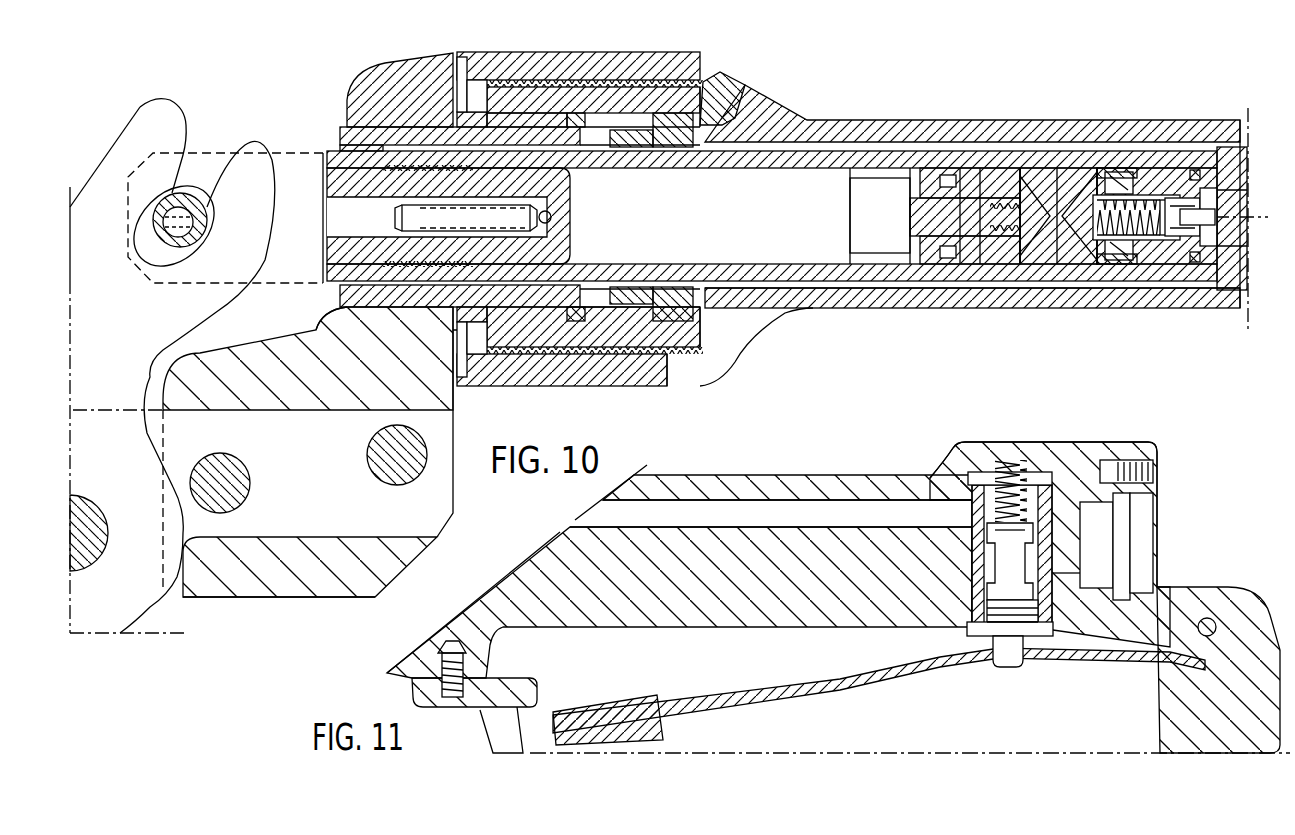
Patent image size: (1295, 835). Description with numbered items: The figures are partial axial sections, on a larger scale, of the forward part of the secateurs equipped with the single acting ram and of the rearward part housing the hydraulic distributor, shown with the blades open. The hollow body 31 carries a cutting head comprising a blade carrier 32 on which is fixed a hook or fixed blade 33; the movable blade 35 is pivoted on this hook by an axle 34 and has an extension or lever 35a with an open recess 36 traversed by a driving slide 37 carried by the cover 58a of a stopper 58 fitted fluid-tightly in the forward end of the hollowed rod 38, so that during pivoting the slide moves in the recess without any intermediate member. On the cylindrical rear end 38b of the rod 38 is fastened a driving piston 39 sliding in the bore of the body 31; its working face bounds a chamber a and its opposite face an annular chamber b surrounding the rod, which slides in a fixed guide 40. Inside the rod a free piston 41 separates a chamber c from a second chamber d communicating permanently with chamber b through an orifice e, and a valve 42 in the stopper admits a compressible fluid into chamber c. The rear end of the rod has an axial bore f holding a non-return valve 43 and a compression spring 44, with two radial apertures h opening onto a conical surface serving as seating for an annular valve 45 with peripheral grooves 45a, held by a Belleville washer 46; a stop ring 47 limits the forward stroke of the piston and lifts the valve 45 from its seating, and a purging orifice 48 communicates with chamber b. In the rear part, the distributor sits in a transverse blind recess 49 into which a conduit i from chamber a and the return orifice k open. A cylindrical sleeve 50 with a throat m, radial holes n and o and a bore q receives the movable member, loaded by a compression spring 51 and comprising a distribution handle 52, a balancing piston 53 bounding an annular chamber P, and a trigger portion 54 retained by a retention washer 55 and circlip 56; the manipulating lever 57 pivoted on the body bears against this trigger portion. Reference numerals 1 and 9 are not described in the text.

In FIG. 11, the housing 1 is at (1080, 613).
In FIG. 10, the valve rod 9 is at (1217, 216).
In FIG. 10, the hollow body 31 is at (822, 298).
In FIG. 11, the hollow body 31 is at (832, 486).
In FIG. 10, the blade carrier 32 is at (440, 383).
In FIG. 10, the hook or fixed blade 33 is at (228, 530).
In FIG. 10, the axle 34 is at (100, 542).
In FIG. 10, the movable blade 35 is at (92, 196).
In FIG. 10, the extension or lever 35a is at (164, 115).
In FIG. 10, the open recess 36 is at (208, 173).
In FIG. 10, the driving slide 37 is at (184, 200).
In FIG. 10, the hollowed rod 38 is at (735, 275).
In FIG. 10, the cylindrical rear end 38b is at (1185, 238).
In FIG. 10, the driving piston 39 is at (1233, 300).
In FIG. 10, the fixed guide 40 is at (523, 313).
In FIG. 10, the free piston 41 is at (912, 252).
In FIG. 10, the valve 42 is at (400, 218).
In FIG. 10, the non-return valve 43 is at (1197, 250).
In FIG. 10, the compression spring 44 is at (1147, 228).
In FIG. 10, the annular valve 45 is at (1150, 168).
In FIG. 10, the peripheral grooves 45a is at (1107, 160).
In FIG. 10, the Belleville washer 46 is at (1185, 166).
In FIG. 10, the stop ring 47 is at (673, 313).
In FIG. 10, the purging orifice 48 is at (735, 95).
In FIG. 11, the transverse blind recess 49 is at (965, 494).
In FIG. 11, the cylindrical sleeve 50 is at (1053, 617).
In FIG. 11, the compression spring 51 is at (1007, 465).
In FIG. 11, the distribution handle 52 is at (1033, 540).
In FIG. 11, the balancing piston 53 is at (970, 628).
In FIG. 11, the trigger portion or pusher element 54 is at (1025, 650).
In FIG. 11, the retention washer 55 is at (990, 640).
In FIG. 11, the circlip 56 is at (995, 660).
In FIG. 11, the manipulating lever 57 is at (877, 684).
In FIG. 10, the stopper 58 is at (560, 313).
In FIG. 10, the cover 58a is at (290, 165).
In FIG. 10, the chamber a is at (1222, 256).
In FIG. 10, the annular chamber b is at (893, 283).
In FIG. 10, the chamber c is at (797, 237).
In FIG. 10, the second chamber d is at (1060, 228).
In FIG. 10, the orifice e is at (1063, 172).
In FIG. 10, the axial bore f is at (1155, 225).
In FIG. 10, the radial apertures h is at (1076, 205).
In FIG. 10, the conduit i is at (1238, 167).
In FIG. 11, the conduit i is at (857, 506).
In FIG. 11, the return orifice k is at (1027, 513).
In FIG. 11, the peripheral annular throat m is at (1048, 530).
In FIG. 11, the radial holes n is at (1053, 553).
In FIG. 11, the radial holes o is at (1130, 459).
In FIG. 11, the bore q is at (1050, 520).
In FIG. 11, the annular chamber P is at (1053, 573).